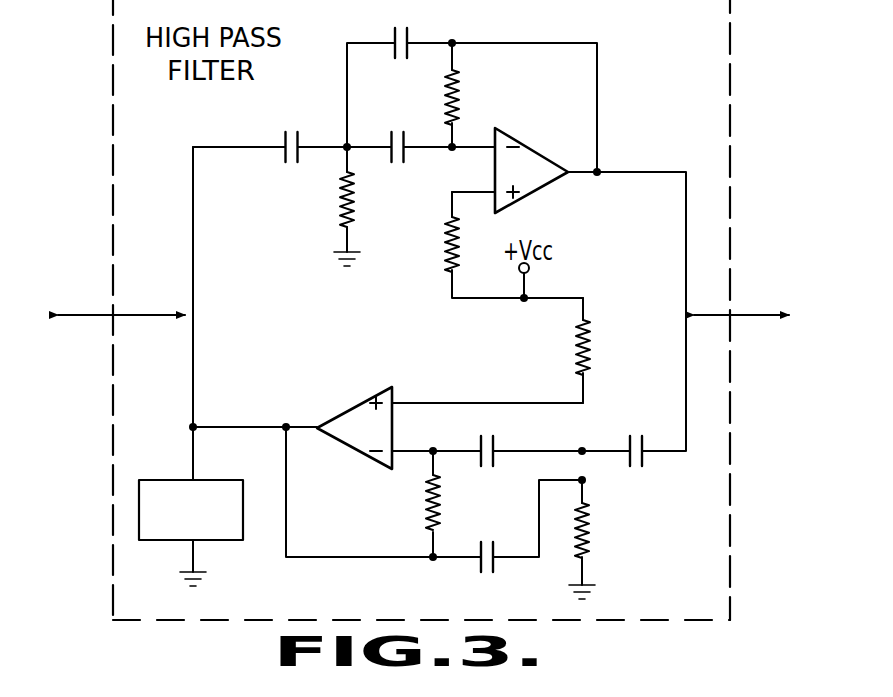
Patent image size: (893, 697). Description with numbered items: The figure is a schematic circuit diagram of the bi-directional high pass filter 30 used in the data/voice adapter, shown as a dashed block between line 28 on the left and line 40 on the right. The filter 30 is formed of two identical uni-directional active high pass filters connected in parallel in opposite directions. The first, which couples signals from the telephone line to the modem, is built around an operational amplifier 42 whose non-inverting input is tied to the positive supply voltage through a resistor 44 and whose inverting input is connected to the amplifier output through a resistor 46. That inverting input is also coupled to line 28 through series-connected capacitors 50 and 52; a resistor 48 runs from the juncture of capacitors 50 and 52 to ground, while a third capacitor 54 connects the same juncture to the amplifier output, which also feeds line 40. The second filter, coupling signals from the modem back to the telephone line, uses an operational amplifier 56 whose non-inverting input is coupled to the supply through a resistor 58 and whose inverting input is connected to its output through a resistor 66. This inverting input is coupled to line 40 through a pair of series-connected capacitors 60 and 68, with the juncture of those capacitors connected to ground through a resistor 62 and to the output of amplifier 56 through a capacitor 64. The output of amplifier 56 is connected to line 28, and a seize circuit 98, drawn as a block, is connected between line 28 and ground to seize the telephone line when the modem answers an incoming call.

The line 28 is at (92, 310).
The bi-directional high pass filter 30 is at (730, 458).
The line 40 is at (757, 312).
The operational amplifier 42 is at (538, 156).
The resistor 44 is at (447, 250).
The resistor 46 is at (459, 95).
The resistor 48 is at (339, 201).
The capacitor 50 is at (398, 165).
The capacitor 52 is at (292, 130).
The third capacitor 54 is at (418, 16).
The operational amplifier 56 is at (371, 396).
The resistor 58 is at (592, 348).
The capacitor 60 is at (637, 443).
The resistor 62 is at (590, 532).
The capacitor 64 is at (486, 576).
The resistor 66 is at (426, 509).
The capacitor 68 is at (491, 440).
The seize circuit 98 is at (228, 541).